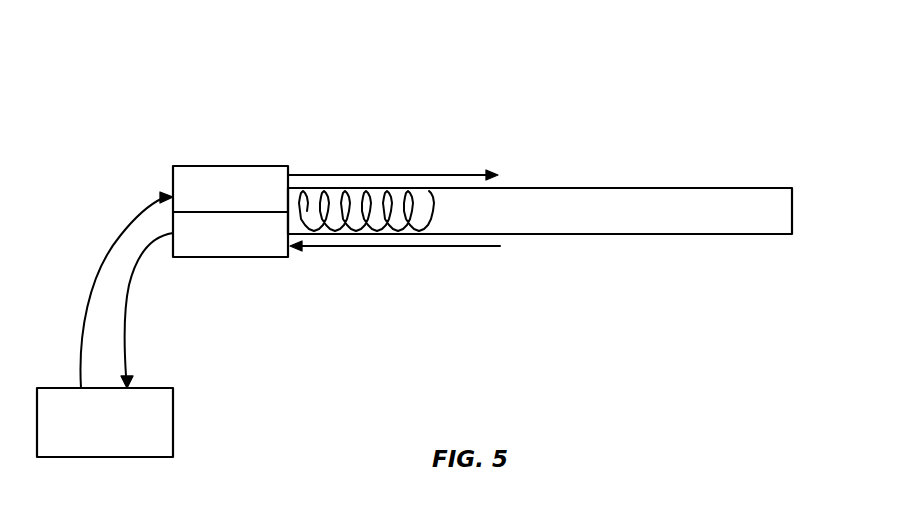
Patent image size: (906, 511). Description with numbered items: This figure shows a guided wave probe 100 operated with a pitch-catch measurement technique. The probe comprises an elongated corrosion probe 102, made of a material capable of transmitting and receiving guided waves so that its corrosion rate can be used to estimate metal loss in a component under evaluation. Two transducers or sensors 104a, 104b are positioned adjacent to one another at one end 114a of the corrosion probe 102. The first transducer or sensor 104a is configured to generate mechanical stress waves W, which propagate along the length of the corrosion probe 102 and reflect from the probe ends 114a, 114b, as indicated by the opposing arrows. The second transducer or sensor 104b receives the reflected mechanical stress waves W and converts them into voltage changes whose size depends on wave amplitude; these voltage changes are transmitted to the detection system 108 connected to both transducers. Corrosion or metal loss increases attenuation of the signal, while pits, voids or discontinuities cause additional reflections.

The guided wave probe 100 is at (470, 102).
The corrosion probe 102 is at (688, 188).
The first transducer or sensor 104a is at (225, 168).
The second transducer or sensor 104b is at (233, 257).
The detection system 108 is at (122, 435).
The first probe end 114a is at (316, 258).
The second probe end 114b is at (773, 258).
The mechanical stress waves W is at (432, 203).